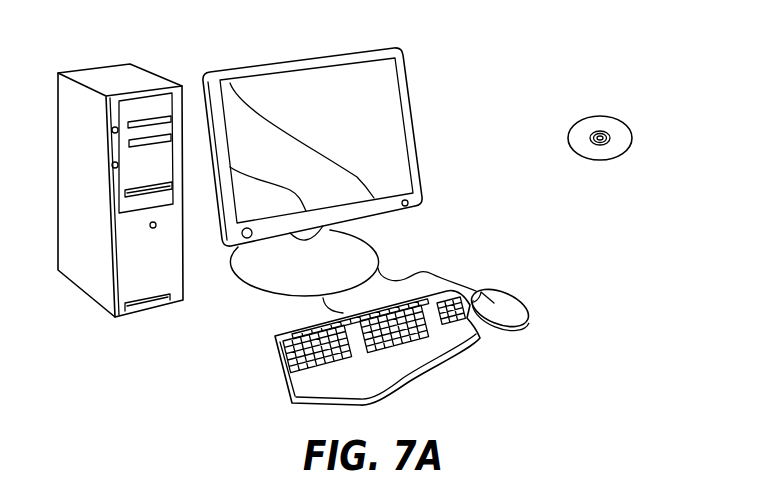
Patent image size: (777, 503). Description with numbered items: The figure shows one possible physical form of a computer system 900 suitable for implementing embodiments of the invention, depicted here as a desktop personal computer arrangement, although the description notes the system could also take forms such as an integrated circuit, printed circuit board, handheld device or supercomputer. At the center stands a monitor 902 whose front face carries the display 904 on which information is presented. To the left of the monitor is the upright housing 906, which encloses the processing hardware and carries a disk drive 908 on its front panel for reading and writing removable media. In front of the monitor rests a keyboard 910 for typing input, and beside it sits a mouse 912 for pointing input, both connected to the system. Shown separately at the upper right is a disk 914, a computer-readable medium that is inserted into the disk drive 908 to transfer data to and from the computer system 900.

The computer system 900 is at (534, 31).
The monitor 902 is at (418, 145).
The display 904 is at (382, 80).
The housing 906 is at (107, 77).
The disk drive 908 is at (170, 188).
The keyboard 910 is at (285, 373).
The mouse 912 is at (520, 300).
The disk 914 is at (617, 116).